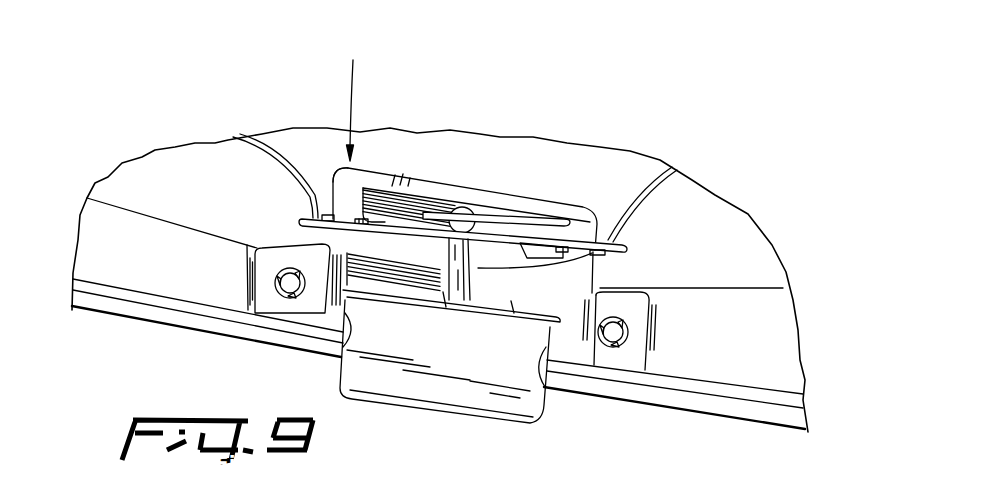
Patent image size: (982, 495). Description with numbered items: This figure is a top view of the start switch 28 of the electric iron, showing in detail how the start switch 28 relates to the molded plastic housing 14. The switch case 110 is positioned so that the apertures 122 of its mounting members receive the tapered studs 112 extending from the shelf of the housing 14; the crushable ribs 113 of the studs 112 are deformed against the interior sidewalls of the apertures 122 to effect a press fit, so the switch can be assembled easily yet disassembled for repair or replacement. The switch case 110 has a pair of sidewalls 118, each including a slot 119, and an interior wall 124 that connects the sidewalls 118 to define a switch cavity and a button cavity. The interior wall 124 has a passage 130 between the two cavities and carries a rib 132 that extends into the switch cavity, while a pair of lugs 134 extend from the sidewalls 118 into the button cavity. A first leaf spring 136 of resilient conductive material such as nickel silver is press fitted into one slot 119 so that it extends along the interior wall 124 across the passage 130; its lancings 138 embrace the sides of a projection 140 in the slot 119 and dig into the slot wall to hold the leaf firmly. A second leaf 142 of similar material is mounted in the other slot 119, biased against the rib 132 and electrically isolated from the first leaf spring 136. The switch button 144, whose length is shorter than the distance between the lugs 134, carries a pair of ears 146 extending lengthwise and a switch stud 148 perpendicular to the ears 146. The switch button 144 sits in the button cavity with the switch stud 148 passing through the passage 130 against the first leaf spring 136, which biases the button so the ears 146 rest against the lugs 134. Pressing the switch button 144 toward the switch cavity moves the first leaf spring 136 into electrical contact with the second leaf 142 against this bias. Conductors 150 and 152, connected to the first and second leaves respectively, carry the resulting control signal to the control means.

The housing 14 is at (700, 352).
The start switch 28 is at (358, 97).
The switch case 110 is at (398, 178).
The tapered studs 112 is at (630, 333).
The crushable ribs 113 is at (624, 321).
The sidewalls 118 is at (340, 173).
The slot 119 is at (304, 227).
The aperture 122 is at (614, 347).
The interior wall 124 is at (397, 250).
The passage 130 is at (452, 262).
The rib 132 is at (541, 243).
The lugs 134 is at (340, 345).
The first leaf spring 136 is at (400, 232).
The lancings 138 is at (375, 186).
The projection 140 is at (348, 224).
The second leaf 142 is at (487, 222).
The switch button 144 is at (440, 420).
The ears 146 is at (345, 303).
The switch stud 148 is at (560, 266).
The conductor 150 is at (262, 147).
The conductor 152 is at (655, 197).